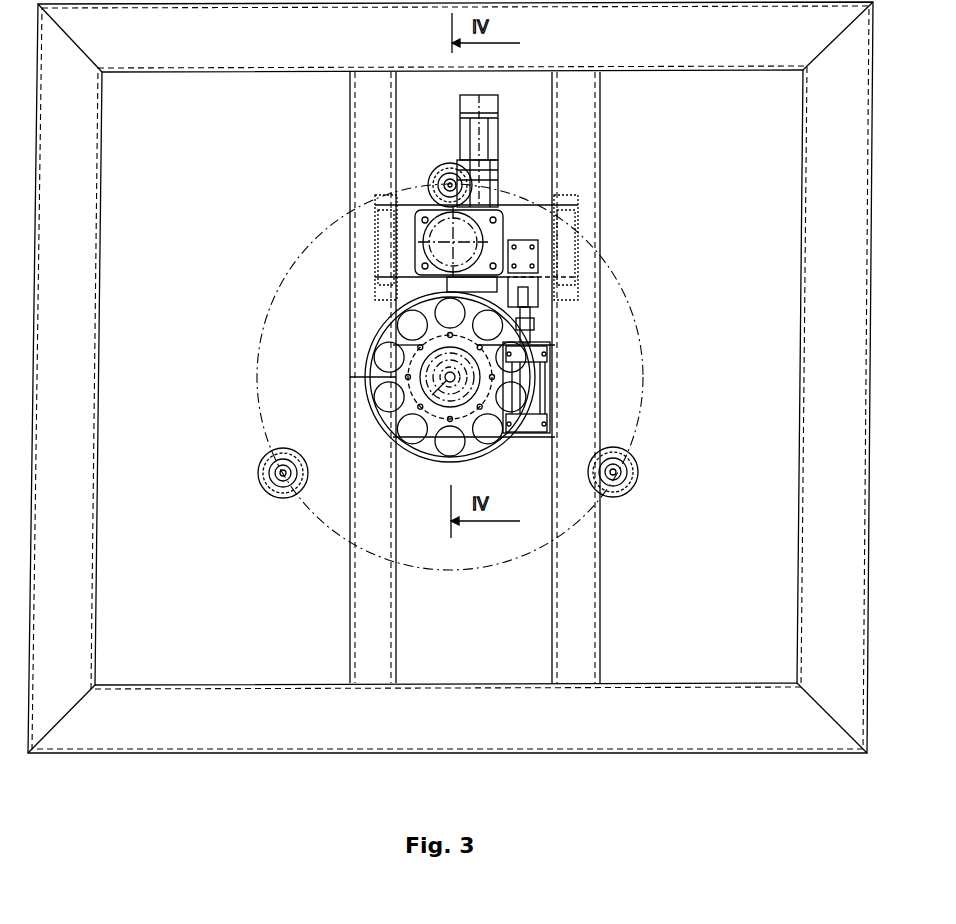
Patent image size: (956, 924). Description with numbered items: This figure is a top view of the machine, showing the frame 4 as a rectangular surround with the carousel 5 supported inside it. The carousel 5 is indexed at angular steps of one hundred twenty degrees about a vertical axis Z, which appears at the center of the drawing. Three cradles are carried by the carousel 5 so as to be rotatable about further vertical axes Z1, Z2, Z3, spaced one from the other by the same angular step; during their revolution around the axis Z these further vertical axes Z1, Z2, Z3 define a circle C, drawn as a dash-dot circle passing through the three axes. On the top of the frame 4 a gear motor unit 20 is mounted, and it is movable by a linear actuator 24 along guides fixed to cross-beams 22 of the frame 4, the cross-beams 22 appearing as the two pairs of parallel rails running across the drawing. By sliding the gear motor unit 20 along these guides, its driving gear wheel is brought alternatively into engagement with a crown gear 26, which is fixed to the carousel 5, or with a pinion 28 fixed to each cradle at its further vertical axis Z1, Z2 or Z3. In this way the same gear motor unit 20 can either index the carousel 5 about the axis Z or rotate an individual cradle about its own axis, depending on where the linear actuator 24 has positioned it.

The frame 4 is at (194, 38).
The carousel 5 is at (672, 322).
The gear motor unit 20 is at (429, 368).
The cross-beams 22 is at (372, 100).
The linear actuator 24 is at (548, 402).
The crown gear 26 is at (422, 458).
The pinion 28 is at (430, 184).
The circle C is at (633, 288).
The vertical axis Z is at (370, 408).
The further vertical axis Z1 is at (432, 168).
The further vertical axis Z2 is at (261, 498).
The further vertical axis Z3 is at (648, 488).